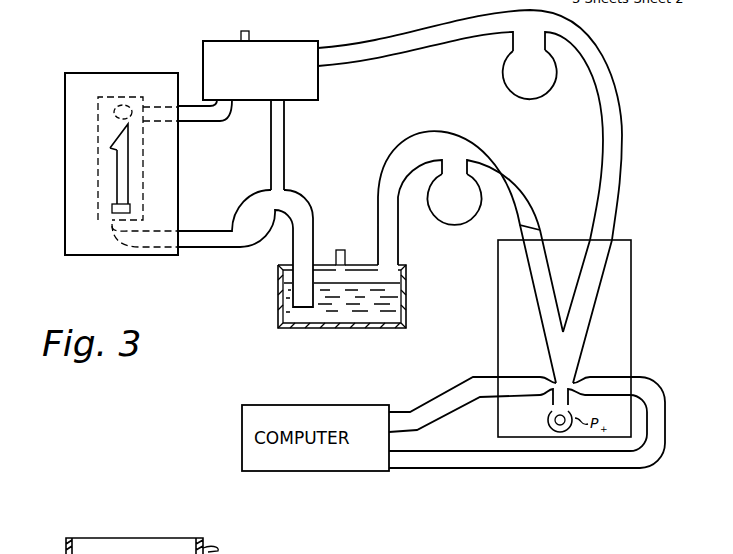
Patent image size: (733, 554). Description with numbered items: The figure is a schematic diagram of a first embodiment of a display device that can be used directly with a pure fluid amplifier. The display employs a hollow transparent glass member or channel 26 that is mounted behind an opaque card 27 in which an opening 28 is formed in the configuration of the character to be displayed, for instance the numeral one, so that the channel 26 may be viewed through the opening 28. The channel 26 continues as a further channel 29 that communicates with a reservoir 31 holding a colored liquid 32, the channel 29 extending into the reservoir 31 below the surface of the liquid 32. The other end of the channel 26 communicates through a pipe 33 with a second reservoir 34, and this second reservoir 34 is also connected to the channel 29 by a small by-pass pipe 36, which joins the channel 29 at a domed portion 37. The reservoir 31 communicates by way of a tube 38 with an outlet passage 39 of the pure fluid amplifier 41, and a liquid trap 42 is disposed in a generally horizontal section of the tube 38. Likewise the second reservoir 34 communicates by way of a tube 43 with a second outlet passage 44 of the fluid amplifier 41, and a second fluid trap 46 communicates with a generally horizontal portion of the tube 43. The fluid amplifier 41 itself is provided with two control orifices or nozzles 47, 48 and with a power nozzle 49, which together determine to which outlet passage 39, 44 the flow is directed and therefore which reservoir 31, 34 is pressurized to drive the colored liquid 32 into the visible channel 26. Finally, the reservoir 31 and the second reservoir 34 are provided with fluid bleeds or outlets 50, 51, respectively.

The hollow transparent channel 26 is at (96, 157).
The opaque card 27 is at (65, 208).
The opening 28 is at (128, 162).
The channel 29 is at (300, 240).
The reservoir 31 is at (280, 305).
The colored liquid 32 is at (374, 303).
The pipe 33 is at (200, 118).
The second reservoir 34 is at (318, 88).
The by-pass pipe 36 is at (284, 130).
The domed portion 37 is at (290, 202).
The tube 38 is at (418, 142).
The outlet passage 39 is at (546, 318).
The pure fluid amplifier 41 is at (651, 315).
The liquid trap 42 is at (468, 200).
The tube 43 is at (418, 50).
The second outlet passage 44 is at (582, 302).
The second fluid trap 46 is at (540, 86).
The control nozzle 47 is at (512, 377).
The control nozzle 48 is at (622, 380).
The power nozzle 49 is at (548, 406).
The fluid bleed 50 is at (340, 250).
The fluid bleed 51 is at (247, 34).